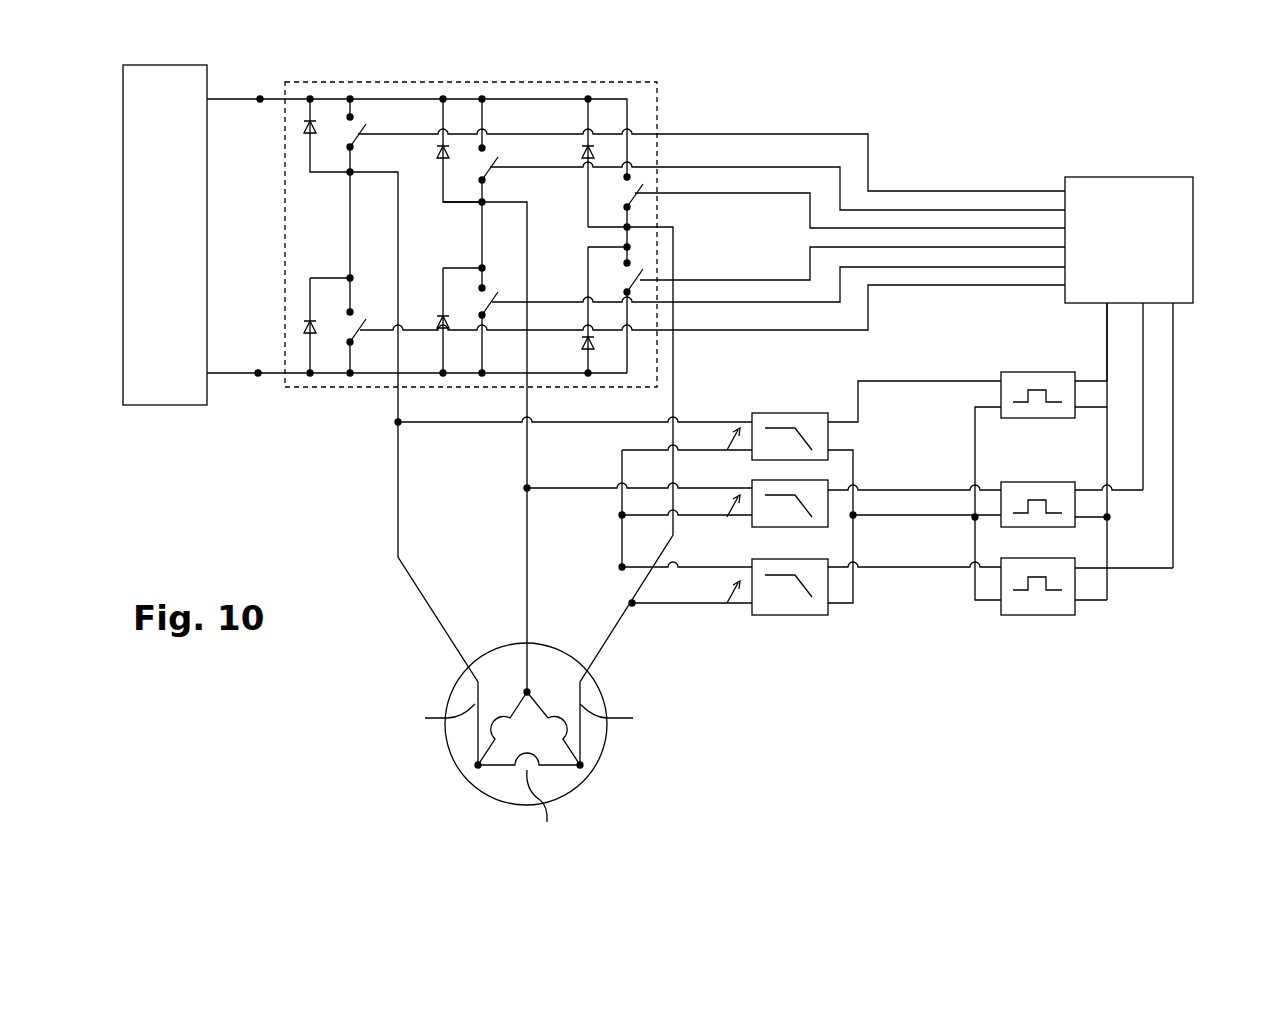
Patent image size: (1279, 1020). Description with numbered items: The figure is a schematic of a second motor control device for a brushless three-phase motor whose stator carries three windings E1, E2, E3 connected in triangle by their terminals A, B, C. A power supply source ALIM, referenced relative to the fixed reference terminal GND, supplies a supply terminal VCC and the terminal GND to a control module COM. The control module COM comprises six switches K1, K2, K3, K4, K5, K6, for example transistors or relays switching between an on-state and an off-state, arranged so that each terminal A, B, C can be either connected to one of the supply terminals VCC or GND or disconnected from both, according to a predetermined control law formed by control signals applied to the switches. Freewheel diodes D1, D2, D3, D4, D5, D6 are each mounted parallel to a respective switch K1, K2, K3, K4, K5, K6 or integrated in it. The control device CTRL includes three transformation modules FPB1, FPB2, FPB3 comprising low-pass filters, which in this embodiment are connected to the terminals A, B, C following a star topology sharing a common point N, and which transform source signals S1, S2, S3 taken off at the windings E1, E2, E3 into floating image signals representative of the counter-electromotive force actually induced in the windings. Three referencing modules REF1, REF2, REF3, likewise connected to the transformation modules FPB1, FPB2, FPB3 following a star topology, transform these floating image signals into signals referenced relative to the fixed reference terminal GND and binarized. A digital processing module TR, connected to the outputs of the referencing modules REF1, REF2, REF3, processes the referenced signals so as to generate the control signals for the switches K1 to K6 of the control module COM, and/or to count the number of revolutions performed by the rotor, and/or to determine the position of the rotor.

The power supply source ALIM is at (165, 66).
The supply voltage line VCC is at (260, 99).
The fixed reference terminal GND is at (258, 373).
The control module COM is at (622, 72).
The control device CTRL is at (820, 78).
The digital processing module TR is at (1129, 388).
The freewheel diode D1 is at (308, 140).
The freewheel diode D2 is at (438, 164).
The freewheel diode D3 is at (580, 160).
The freewheel diode D4 is at (302, 328).
The freewheel diode D5 is at (438, 332).
The freewheel diode D6 is at (592, 378).
The switch K1 is at (366, 140).
The switch K2 is at (500, 172).
The switch K3 is at (650, 195).
The switch K4 is at (365, 320).
The switch K5 is at (496, 298).
The switch K6 is at (648, 275).
The winding terminal A is at (549, 467).
The winding terminal B is at (597, 447).
The winding terminal C is at (666, 494).
The neutral point N is at (798, 505).
The source signal S1 is at (722, 442).
The source signal S2 is at (722, 508).
The source signal S3 is at (735, 592).
The transformation module FPB1 is at (775, 413).
The transformation module FPB2 is at (805, 527).
The transformation module FPB3 is at (788, 615).
The referencing module REF1 is at (1021, 372).
The referencing module REF2 is at (1058, 482).
The referencing module REF3 is at (1043, 615).
The stator winding E1 is at (501, 724).
The stator winding E2 is at (529, 804).
The stator winding E3 is at (597, 730).